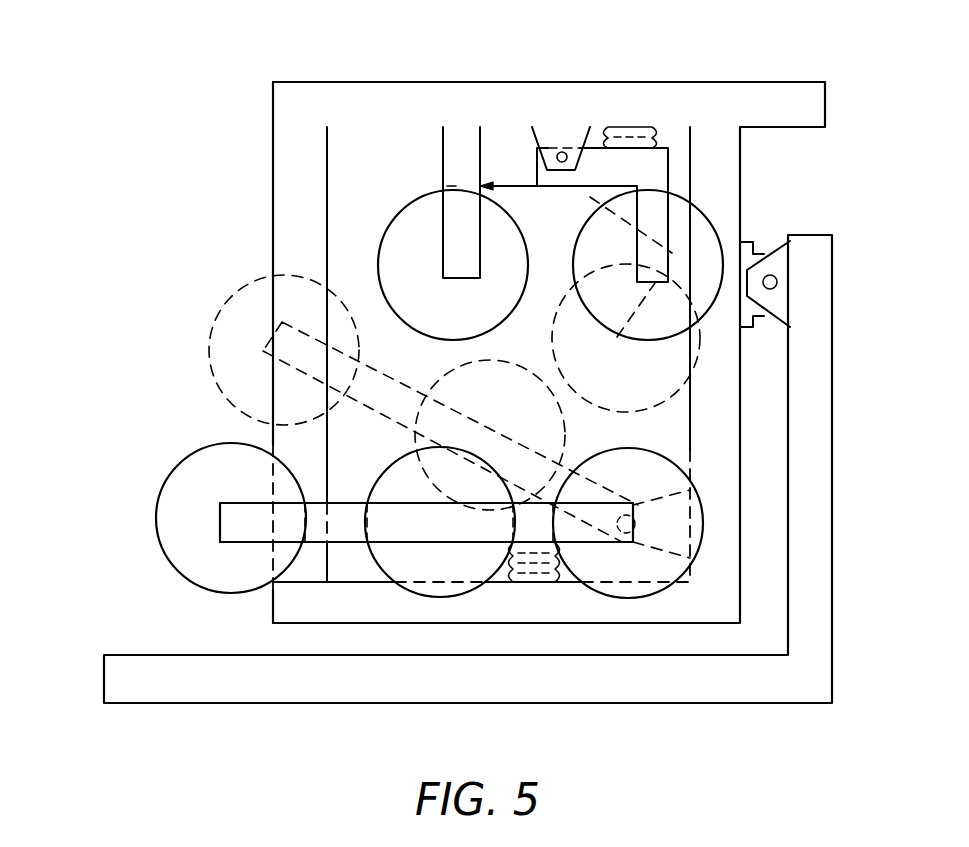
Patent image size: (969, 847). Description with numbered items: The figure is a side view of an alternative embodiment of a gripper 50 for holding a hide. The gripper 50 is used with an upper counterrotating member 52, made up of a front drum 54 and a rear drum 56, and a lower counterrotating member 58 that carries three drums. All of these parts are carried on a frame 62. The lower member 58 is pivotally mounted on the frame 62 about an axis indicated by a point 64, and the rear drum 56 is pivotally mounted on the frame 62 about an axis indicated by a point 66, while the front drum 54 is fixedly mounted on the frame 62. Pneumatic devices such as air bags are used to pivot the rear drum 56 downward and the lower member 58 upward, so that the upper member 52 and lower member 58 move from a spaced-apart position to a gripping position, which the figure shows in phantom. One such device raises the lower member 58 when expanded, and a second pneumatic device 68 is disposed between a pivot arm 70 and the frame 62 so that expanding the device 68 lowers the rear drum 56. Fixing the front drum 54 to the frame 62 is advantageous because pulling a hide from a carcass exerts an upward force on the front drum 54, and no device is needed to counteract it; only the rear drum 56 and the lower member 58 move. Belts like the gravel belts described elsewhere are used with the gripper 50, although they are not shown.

The gripper 50 is at (125, 431).
The upper counterrotating member 52 is at (670, 139).
The front drum 54 is at (414, 221).
The rear drum 56 is at (591, 268).
The lower counterrotating member 58 is at (168, 368).
The frame 62 is at (452, 81).
The point 64 is at (771, 275).
The point 66 is at (562, 151).
The second pneumatic device 68 is at (636, 137).
The pivot arm 70 is at (597, 147).